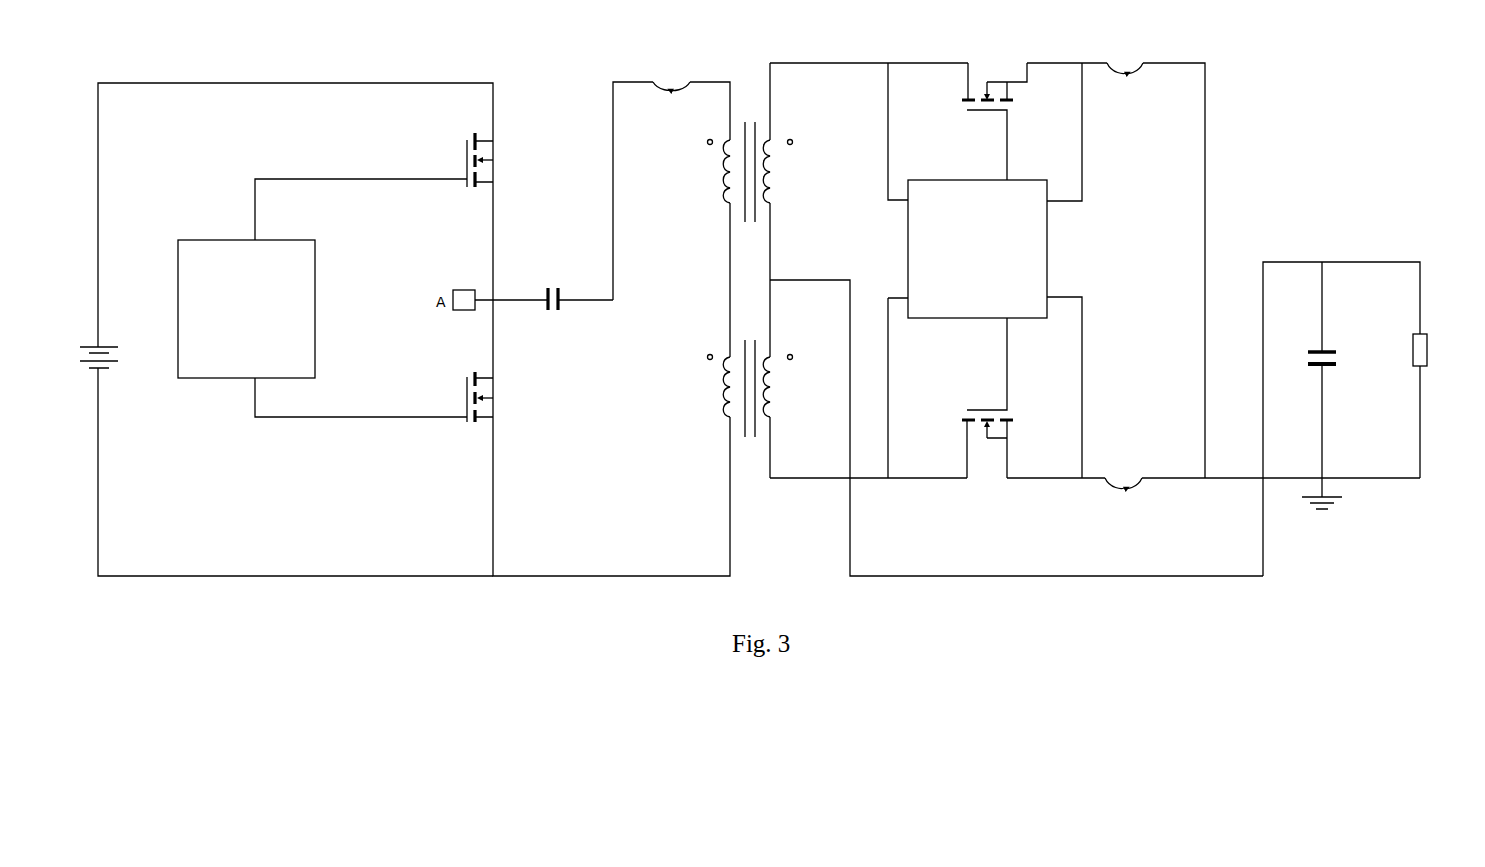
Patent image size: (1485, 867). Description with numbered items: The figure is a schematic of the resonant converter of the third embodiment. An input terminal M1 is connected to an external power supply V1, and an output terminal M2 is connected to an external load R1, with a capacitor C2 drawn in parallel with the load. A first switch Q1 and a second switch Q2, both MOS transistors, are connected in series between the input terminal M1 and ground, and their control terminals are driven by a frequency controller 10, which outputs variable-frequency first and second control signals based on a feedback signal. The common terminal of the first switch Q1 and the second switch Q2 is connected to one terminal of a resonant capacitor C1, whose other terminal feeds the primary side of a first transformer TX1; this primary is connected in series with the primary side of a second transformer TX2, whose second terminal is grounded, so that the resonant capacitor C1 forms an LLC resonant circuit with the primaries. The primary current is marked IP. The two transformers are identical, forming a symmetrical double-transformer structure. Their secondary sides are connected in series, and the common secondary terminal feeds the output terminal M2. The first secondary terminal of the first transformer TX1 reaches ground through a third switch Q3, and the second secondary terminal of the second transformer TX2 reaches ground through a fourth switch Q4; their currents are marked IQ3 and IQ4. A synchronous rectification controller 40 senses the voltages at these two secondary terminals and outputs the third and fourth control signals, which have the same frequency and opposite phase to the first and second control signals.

The frequency controller 10 is at (280, 240).
The synchronous rectification controller 40 is at (1023, 180).
The input terminal M1 is at (411, 318).
The output terminal M2 is at (1341, 406).
The external power supply V1 is at (110, 344).
The first switch Q1 is at (476, 171).
The second switch Q2 is at (476, 410).
The third switch Q3 is at (979, 121).
The fourth switch Q4 is at (972, 398).
The resonant capacitor C1 is at (544, 310).
The output capacitor C2 is at (1333, 379).
The external load R1 is at (1432, 343).
The first transformer TX1 is at (757, 172).
The second transformer TX2 is at (757, 388).
The current at IP is at (671, 76).
The current at the third switch IQ3 is at (1125, 57).
The current at the fourth switch IQ4 is at (1123, 473).